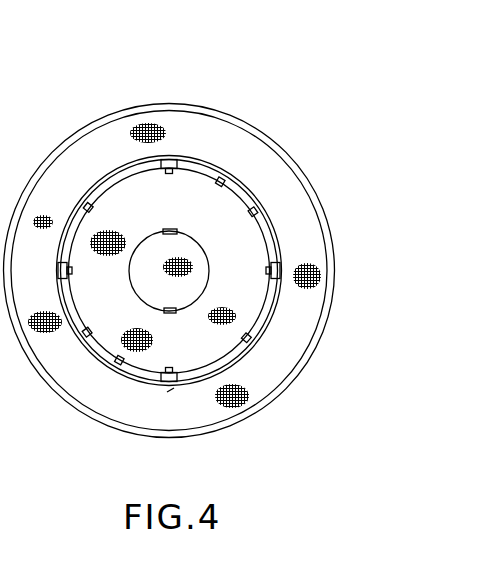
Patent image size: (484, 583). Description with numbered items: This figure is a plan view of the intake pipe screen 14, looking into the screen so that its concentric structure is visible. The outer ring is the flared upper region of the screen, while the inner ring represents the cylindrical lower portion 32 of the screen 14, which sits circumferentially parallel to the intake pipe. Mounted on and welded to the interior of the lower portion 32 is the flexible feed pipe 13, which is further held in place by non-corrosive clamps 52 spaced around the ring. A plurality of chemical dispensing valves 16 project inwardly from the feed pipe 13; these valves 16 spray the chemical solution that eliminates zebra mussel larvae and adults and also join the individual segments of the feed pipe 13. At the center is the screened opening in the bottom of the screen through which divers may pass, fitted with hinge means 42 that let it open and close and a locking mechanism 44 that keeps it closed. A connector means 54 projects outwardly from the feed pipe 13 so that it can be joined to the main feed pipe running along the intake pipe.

The feed pipe 13 is at (275, 240).
The intake pipe screen 14 is at (212, 104).
The chemical dispensing valves 16 is at (258, 207).
The lower portion 32 is at (145, 157).
The hinge means 42 is at (169, 231).
The locking mechanism 44 is at (171, 313).
The non-corrosive clamps 52 is at (82, 197).
The connector means 54 is at (167, 392).